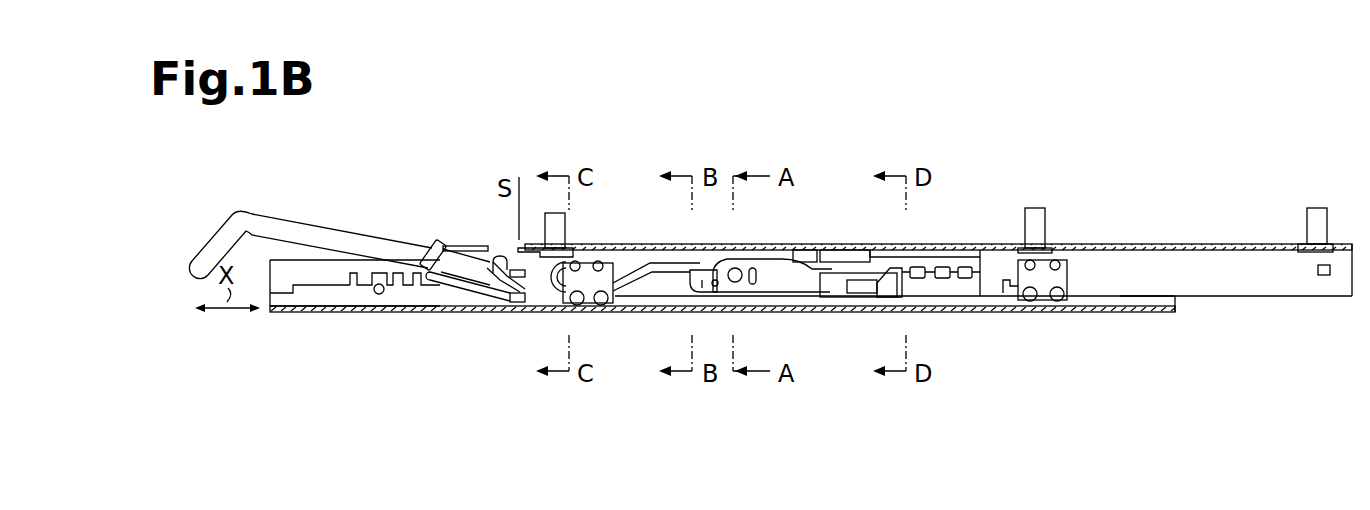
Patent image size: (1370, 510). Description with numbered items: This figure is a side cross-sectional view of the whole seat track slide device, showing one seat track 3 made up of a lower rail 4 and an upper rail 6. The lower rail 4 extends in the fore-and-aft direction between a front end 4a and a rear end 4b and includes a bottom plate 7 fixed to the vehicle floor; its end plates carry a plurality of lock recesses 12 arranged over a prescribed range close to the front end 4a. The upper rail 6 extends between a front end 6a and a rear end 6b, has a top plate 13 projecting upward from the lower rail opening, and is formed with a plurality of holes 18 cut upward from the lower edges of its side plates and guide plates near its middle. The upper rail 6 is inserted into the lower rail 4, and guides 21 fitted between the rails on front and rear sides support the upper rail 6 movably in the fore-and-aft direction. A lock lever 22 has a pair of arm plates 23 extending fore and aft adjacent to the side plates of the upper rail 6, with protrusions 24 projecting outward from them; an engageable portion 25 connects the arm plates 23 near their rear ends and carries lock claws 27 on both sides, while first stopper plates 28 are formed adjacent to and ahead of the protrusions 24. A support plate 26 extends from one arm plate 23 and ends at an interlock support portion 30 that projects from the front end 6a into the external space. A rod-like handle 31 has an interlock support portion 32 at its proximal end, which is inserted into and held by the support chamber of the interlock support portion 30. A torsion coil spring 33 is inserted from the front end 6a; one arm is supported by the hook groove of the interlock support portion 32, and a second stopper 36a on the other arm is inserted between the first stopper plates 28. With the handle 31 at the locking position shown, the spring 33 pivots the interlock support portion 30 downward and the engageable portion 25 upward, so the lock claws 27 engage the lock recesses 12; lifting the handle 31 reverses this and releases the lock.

The seat track 3 is at (1163, 245).
The lower rail 4 is at (397, 318).
The front end 4a is at (276, 313).
The rear end 4b is at (1172, 313).
The upper rail 6 is at (834, 245).
The front end 6a is at (528, 245).
The rear end 6b is at (1345, 244).
The bottom plate 7 is at (416, 316).
The lock recess 12 is at (356, 298).
The top plate 13 is at (797, 244).
The hole 18 is at (952, 278).
The guide 21 is at (609, 292).
The lock lever 22 is at (822, 282).
The arm plate 23 is at (797, 286).
The protrusion 24 is at (738, 283).
The engageable portion 25 is at (940, 245).
The support plate 26 is at (518, 256).
The lock claw 27 is at (956, 265).
The first stopper plate 28 is at (700, 268).
The interlock support portion 30 is at (458, 246).
The handle 31 is at (313, 222).
The interlock support portion 32 is at (462, 276).
The torsion coil spring 33 is at (546, 292).
The second stopper 36a is at (690, 262).